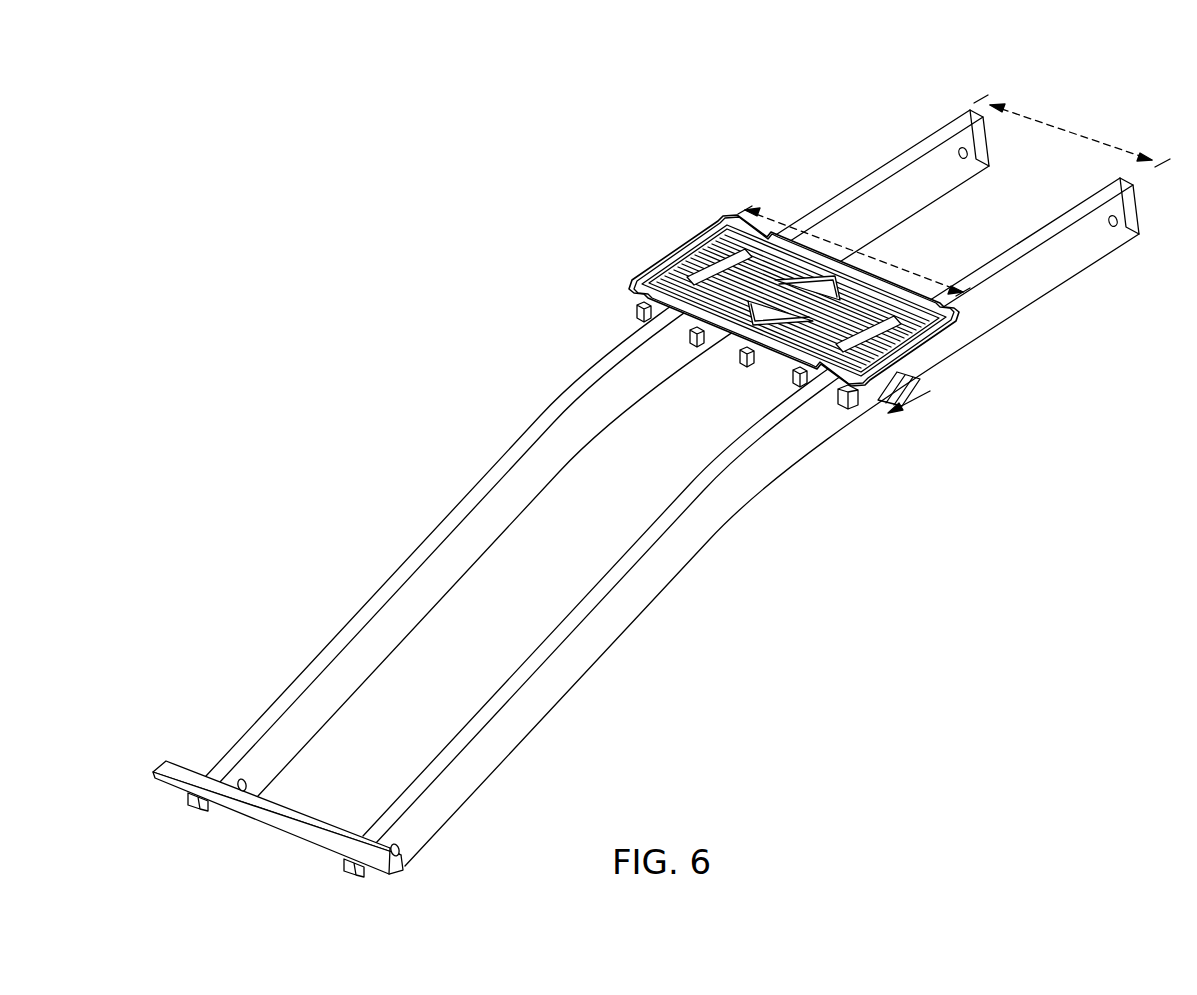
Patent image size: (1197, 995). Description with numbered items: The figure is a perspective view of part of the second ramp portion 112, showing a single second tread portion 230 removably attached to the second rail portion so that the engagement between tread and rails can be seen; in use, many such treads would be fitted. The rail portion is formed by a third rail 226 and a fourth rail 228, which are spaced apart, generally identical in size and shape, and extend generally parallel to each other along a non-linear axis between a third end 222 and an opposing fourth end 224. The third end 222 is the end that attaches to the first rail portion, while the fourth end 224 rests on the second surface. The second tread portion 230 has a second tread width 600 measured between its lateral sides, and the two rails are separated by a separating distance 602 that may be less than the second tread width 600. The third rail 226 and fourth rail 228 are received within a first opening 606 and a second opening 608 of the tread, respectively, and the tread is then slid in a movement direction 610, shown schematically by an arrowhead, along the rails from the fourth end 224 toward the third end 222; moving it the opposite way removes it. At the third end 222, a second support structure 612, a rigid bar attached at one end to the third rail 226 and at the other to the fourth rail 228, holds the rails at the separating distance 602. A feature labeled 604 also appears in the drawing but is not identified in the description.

The second ramp portion 112 is at (470, 256).
The third end 222 is at (171, 734).
The fourth end 224 is at (968, 97).
The third rail 226 is at (412, 549).
The fourth rail 228 is at (681, 556).
The second tread portion 230 is at (706, 222).
The second tread width 600 is at (941, 282).
The separating distance 602 is at (1145, 157).
The clip edge flange 604 is at (652, 270).
The first opening 606 is at (692, 261).
The second opening 608 is at (907, 350).
The movement direction 610 is at (910, 405).
The second support structure 612 is at (238, 812).